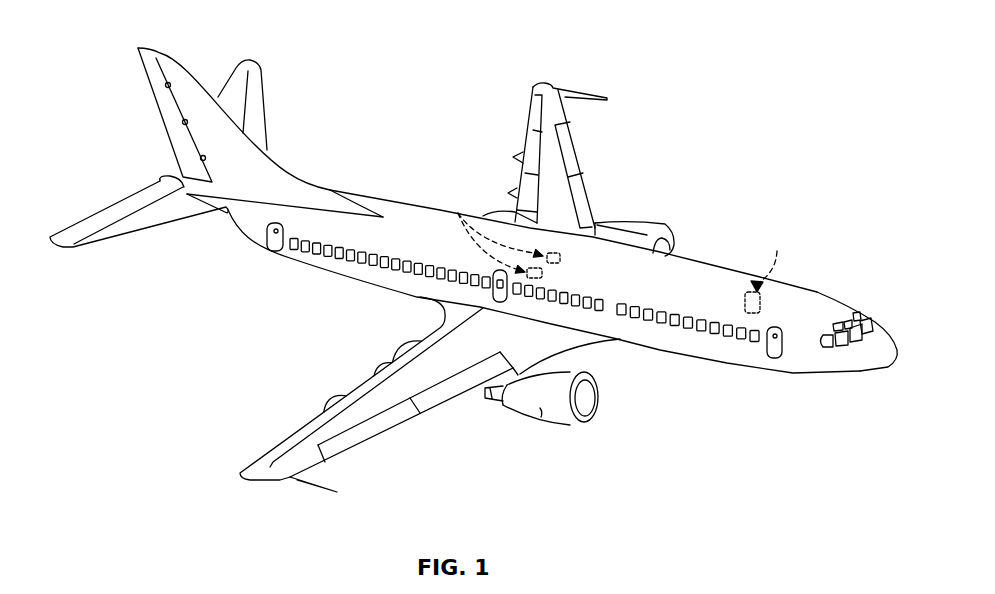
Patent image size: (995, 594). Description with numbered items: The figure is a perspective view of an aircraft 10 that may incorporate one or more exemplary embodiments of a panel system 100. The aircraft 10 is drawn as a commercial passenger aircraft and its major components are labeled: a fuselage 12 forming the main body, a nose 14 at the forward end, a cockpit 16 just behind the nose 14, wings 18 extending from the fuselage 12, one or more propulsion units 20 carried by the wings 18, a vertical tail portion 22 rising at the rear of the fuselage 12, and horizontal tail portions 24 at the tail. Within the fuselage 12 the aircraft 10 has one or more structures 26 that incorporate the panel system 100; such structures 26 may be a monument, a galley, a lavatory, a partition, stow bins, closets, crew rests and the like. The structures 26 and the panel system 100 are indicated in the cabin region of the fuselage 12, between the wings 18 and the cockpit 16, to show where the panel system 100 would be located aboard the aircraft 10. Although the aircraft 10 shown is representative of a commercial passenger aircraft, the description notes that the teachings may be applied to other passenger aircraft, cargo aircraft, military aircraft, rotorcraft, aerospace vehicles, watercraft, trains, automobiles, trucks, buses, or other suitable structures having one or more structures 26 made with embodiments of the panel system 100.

The aircraft 10 is at (745, 138).
The fuselage 12 is at (702, 267).
The nose 14 is at (873, 360).
The cockpit 16 is at (860, 327).
The wings 18 is at (570, 153).
The propulsion units 20 is at (645, 232).
The vertical tail portion 22 is at (188, 87).
The horizontal tail portions 24 is at (257, 115).
The structures 26 is at (458, 213).
The panel system 100 is at (560, 262).